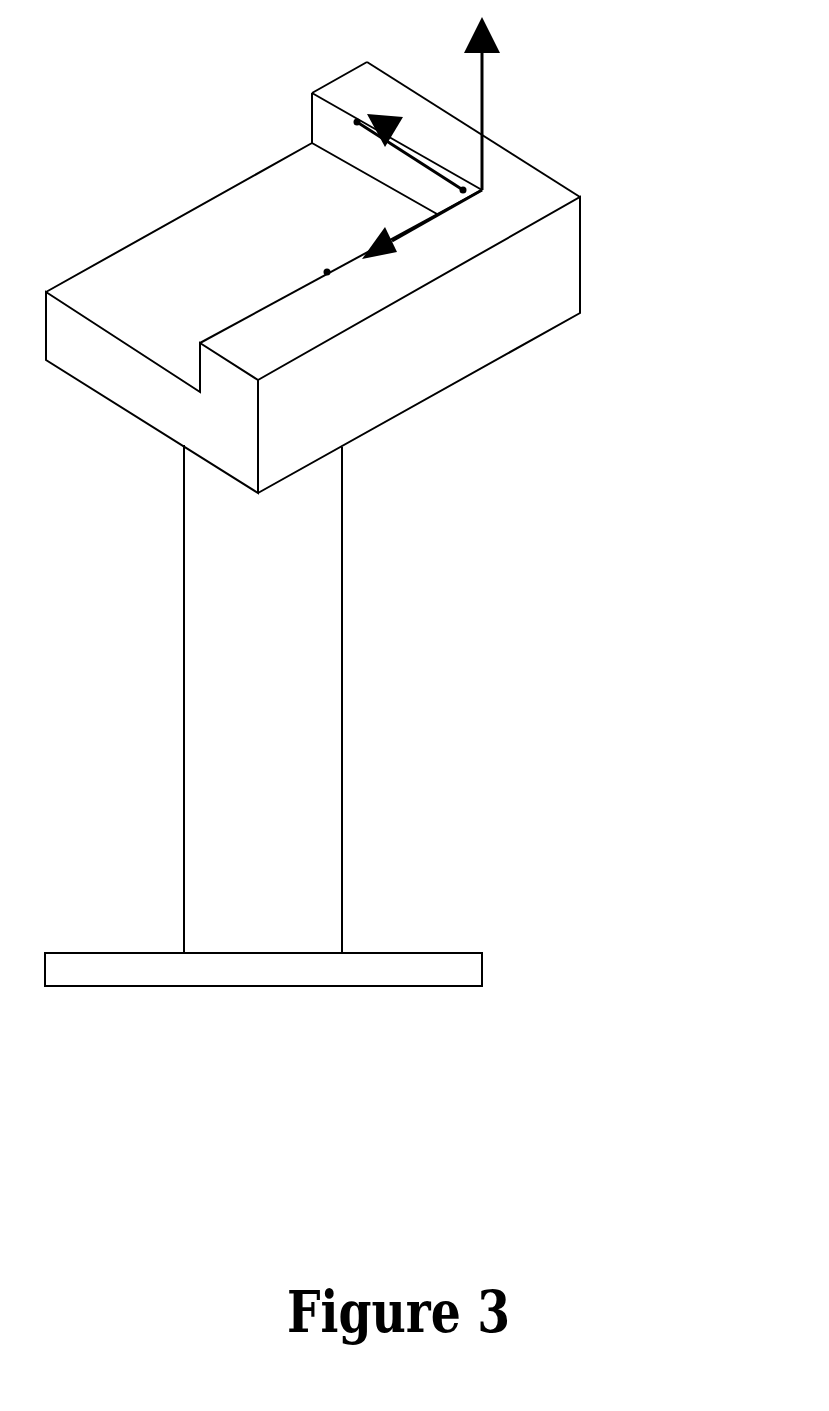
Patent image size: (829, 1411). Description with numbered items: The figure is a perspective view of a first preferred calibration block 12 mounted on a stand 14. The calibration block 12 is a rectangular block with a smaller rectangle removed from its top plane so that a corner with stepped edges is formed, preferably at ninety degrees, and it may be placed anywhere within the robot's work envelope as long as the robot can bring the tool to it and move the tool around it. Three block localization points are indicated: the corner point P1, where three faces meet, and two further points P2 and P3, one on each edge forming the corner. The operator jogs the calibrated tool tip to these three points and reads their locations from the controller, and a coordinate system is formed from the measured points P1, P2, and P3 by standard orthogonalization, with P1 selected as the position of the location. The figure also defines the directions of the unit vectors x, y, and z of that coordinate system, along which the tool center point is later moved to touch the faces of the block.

The calibration block 12 is at (558, 262).
The stand 14 is at (315, 618).
The x unit vector x is at (417, 147).
The y unit vector y is at (398, 243).
The z unit vector z is at (483, 78).
The corner point P1 is at (482, 190).
The edge localization point P2 is at (357, 122).
The edge localization point P3 is at (327, 272).